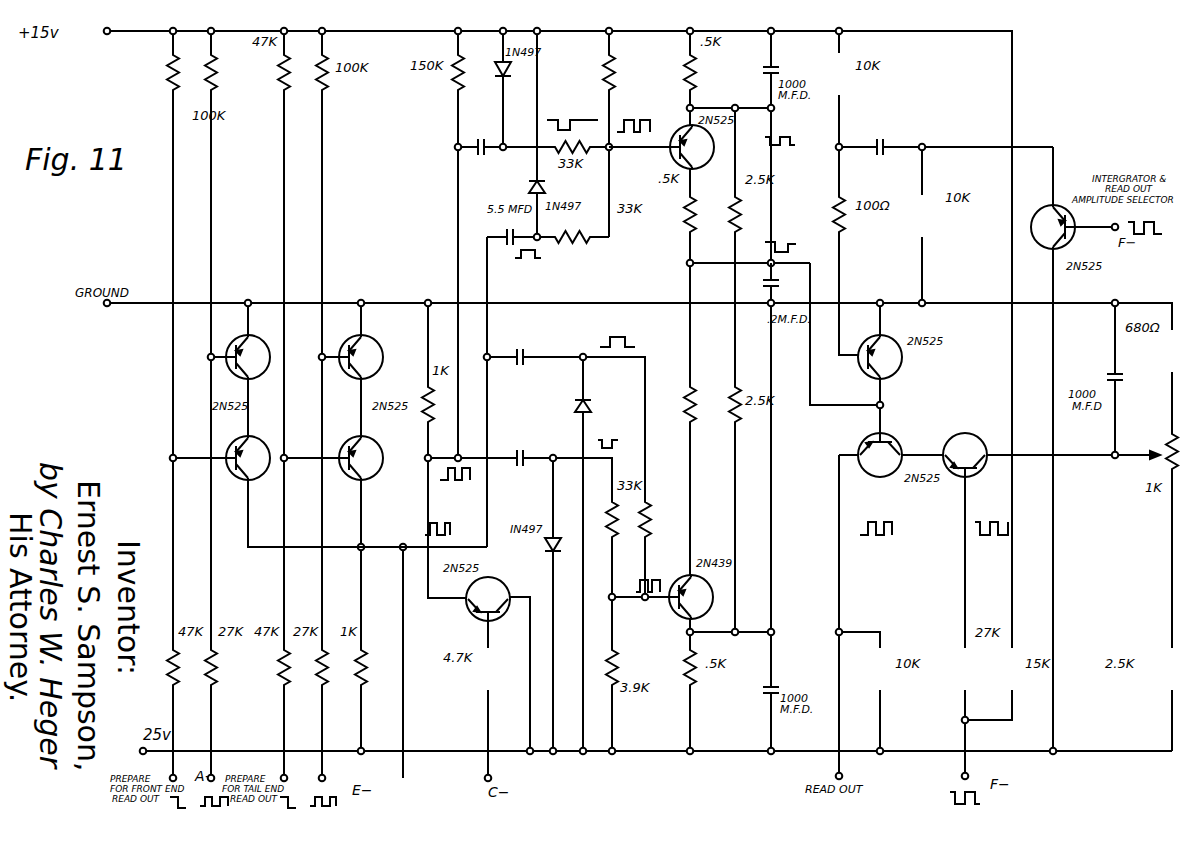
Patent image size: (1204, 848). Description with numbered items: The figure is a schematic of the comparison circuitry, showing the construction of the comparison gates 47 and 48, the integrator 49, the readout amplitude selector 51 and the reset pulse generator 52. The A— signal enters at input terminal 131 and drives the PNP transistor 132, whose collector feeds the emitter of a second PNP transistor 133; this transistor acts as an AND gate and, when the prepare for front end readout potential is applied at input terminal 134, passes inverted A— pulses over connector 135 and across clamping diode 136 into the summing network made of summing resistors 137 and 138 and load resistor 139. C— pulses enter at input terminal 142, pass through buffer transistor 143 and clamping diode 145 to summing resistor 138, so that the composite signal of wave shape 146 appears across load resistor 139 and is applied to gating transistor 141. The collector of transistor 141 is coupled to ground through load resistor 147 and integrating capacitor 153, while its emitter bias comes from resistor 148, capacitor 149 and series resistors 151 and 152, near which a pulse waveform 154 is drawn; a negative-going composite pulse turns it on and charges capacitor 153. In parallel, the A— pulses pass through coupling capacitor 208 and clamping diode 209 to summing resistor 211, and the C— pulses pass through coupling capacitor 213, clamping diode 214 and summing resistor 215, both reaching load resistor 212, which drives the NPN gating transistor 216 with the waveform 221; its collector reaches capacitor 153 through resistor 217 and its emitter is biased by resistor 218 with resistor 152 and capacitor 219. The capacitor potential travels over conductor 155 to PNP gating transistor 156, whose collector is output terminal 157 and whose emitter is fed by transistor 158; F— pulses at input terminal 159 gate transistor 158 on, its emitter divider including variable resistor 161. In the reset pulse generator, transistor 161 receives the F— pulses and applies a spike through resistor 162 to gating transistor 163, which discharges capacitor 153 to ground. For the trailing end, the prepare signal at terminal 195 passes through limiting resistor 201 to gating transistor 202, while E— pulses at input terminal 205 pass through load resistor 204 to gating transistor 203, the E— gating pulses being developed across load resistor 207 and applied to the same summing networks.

The comparison gate 47 is at (645, 193).
The comparison gate 48 is at (657, 666).
The integrator 49 is at (758, 287).
The readout amplitude selector 51 is at (920, 506).
The reset pulse generator 52 is at (976, 176).
The input terminal 131 is at (214, 775).
The PNP junction transistor 132 is at (262, 339).
The second PNP junction transistor 133 is at (258, 477).
The input terminal 134 is at (176, 775).
The connector 135 is at (386, 557).
The clamping diode 136 is at (530, 184).
The summing resistor 137 is at (590, 242).
The summing resistor 138 is at (593, 152).
The load resistor 139 is at (615, 62).
The gating transistor 141 is at (678, 130).
The input terminal 142 is at (492, 776).
The buffer transistor 143 is at (503, 582).
The second clamping diode 145 is at (507, 80).
The composite output signal wave shape 146 is at (648, 150).
The load resistor 147 is at (684, 230).
The resistor 148 is at (696, 72).
The capacitor 149 is at (778, 64).
The resistor 151 is at (741, 210).
The resistor 152 is at (740, 420).
The integrating capacitor 153 is at (780, 282).
The pulse waveform 154 is at (770, 240).
The conductor 155 is at (808, 360).
The PNP junction gating transistor 156 is at (898, 436).
The output terminal 157 is at (835, 774).
The second PNP junction transistor 158 is at (960, 436).
The input terminal 159 is at (961, 774).
The variable resistor and first transistor 161 is at (1152, 430).
The resistor 162 is at (843, 232).
The second gating transistor 163 is at (902, 360).
The terminal 195 is at (287, 775).
The limiting resistor 201 is at (280, 690).
The gating transistor 202 is at (374, 476).
The second gating transistor 203 is at (376, 341).
The load resistor 204 is at (318, 690).
The input terminal 205 is at (325, 776).
The load resistor 207 is at (357, 690).
The coupling capacitor 208 is at (524, 362).
The clamping diode 209 is at (590, 408).
The summing resistor 211 is at (650, 530).
The load resistor 212 is at (612, 690).
The coupling capacitor 213 is at (524, 463).
The clamping diode 214 is at (558, 548).
The summing resistor 215 is at (618, 530).
The gating transistor 216 is at (705, 614).
The resistor 217 is at (695, 422).
The resistor 218 is at (695, 685).
The capacitor 219 is at (778, 684).
The composite signal wave form 221 is at (655, 594).